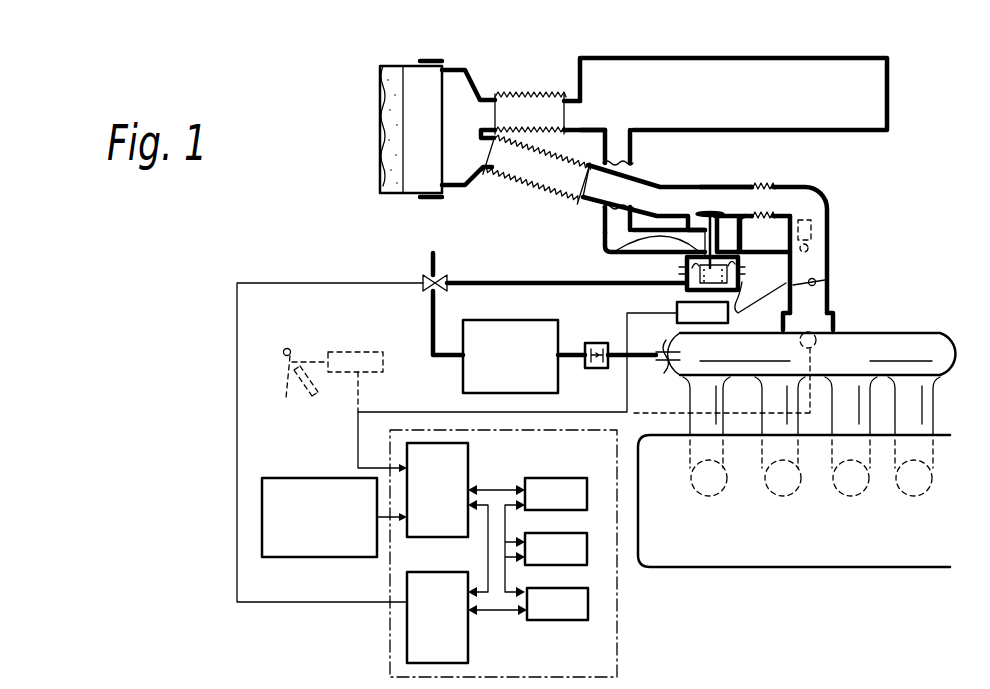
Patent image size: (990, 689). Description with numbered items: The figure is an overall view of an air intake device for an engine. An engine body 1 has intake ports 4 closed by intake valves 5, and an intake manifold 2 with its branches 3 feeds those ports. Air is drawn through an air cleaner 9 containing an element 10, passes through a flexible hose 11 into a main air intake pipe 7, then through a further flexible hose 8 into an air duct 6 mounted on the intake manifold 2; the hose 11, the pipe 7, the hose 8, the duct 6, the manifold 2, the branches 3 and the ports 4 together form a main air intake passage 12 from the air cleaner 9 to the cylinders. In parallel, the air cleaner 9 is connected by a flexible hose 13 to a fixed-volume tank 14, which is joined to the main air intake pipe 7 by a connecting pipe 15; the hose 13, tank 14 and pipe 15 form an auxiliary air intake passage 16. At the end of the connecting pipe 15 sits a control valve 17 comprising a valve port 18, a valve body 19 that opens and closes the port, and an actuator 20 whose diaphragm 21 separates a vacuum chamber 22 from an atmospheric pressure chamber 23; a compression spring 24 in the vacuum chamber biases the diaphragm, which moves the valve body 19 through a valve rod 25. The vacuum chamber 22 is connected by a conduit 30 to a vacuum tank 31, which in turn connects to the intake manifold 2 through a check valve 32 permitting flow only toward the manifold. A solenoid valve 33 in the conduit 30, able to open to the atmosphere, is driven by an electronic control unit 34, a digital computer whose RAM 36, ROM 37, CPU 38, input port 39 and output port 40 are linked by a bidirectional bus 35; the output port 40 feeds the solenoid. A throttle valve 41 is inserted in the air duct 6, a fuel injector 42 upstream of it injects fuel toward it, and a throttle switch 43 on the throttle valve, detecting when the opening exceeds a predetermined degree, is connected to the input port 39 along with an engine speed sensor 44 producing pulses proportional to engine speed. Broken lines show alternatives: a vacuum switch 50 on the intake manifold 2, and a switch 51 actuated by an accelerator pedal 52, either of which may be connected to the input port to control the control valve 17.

The engine body 1 is at (860, 568).
The intake manifold 2 is at (895, 332).
The branches of the intake manifold 3 is at (902, 420).
The intake ports 4 is at (691, 446).
The intake valves 5 is at (700, 492).
The air duct 6 is at (830, 228).
The main air intake pipe 7 is at (704, 186).
The flexible hose 8 is at (772, 185).
The air cleaner 9 is at (455, 69).
The element 10 is at (380, 86).
The flexible hose 11 is at (524, 188).
The main air intake passage 12 is at (672, 191).
The flexible hose 13 is at (524, 89).
The tank 14 is at (687, 55).
The connecting pipe 15 is at (600, 242).
The auxiliary air intake passage 16 is at (630, 148).
The control valve 17 is at (683, 291).
The valve port 18 is at (730, 227).
The valve body 19 is at (714, 210).
The actuator 20 is at (682, 270).
The diaphragm 21 is at (744, 268).
The vacuum chamber 22 is at (743, 276).
The atmospheric pressure chamber 23 is at (739, 264).
The compression spring 24 is at (760, 306).
The valve rod 25 is at (624, 260).
The conduit 30 is at (492, 282).
The vacuum tank 31 is at (508, 320).
The check valve 32 is at (598, 343).
The solenoid valve 33 is at (440, 271).
The electronic control unit 34 is at (620, 627).
The bidirectional bus 35 is at (500, 612).
The RAM 36 is at (565, 478).
The ROM 37 is at (573, 526).
The CPU 38 is at (573, 583).
The input port 39 is at (470, 457).
The output port 40 is at (441, 573).
The throttle valve 41 is at (830, 282).
The fuel injector 42 is at (813, 217).
The throttle switch 43 is at (677, 318).
The engine speed sensor 44 is at (298, 479).
The vacuum switch 50 is at (818, 332).
The switch 51 is at (359, 352).
The accelerator pedal 52 is at (294, 386).